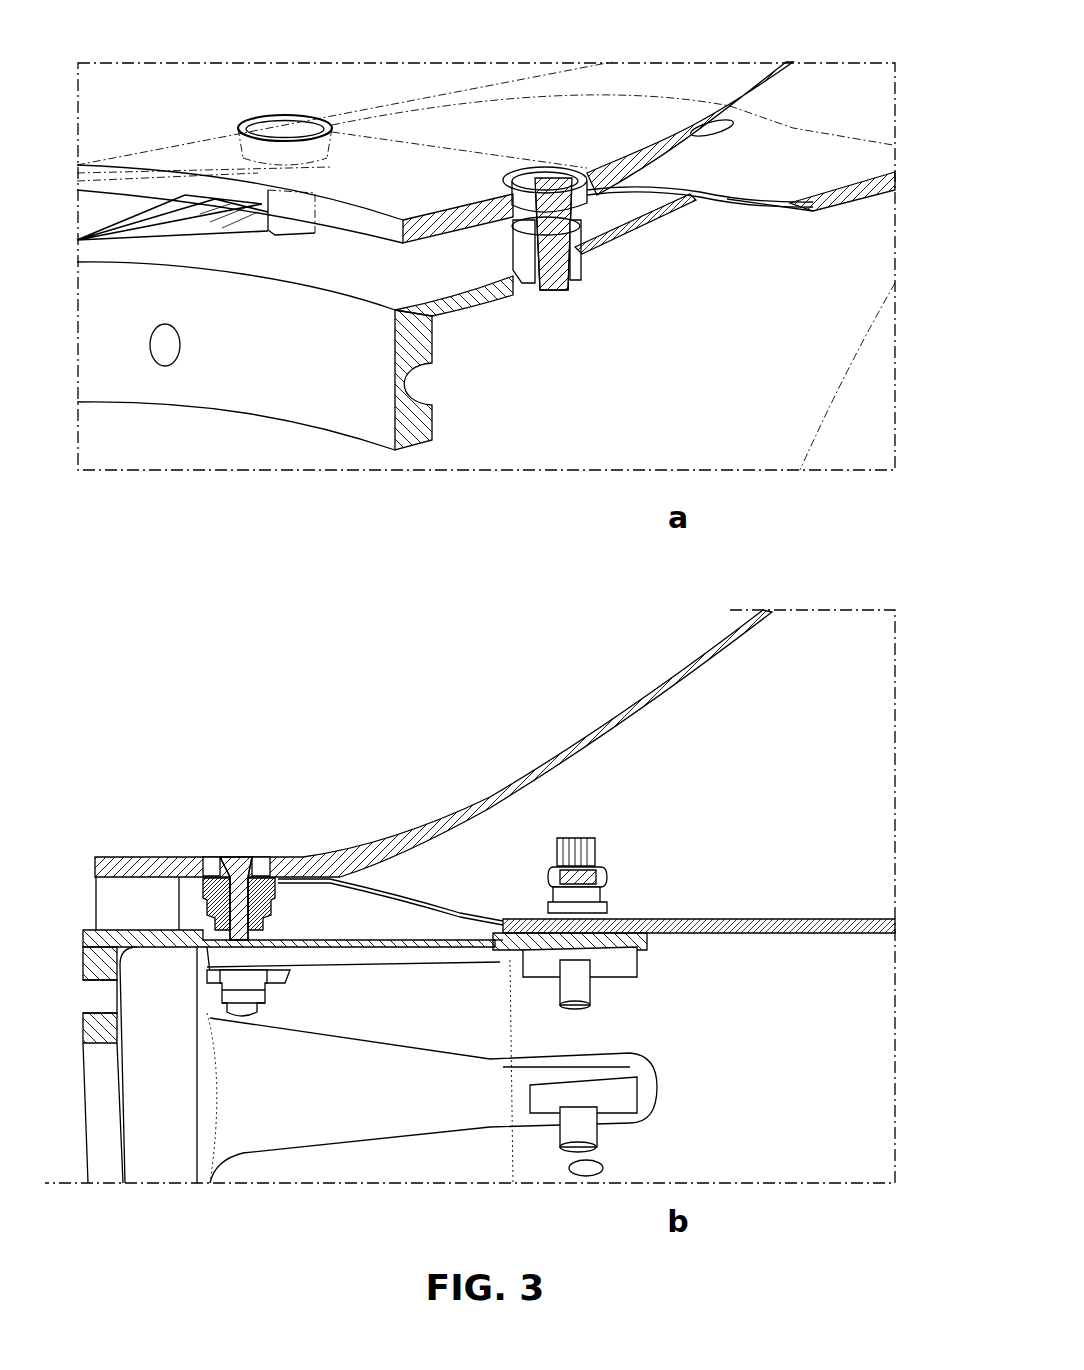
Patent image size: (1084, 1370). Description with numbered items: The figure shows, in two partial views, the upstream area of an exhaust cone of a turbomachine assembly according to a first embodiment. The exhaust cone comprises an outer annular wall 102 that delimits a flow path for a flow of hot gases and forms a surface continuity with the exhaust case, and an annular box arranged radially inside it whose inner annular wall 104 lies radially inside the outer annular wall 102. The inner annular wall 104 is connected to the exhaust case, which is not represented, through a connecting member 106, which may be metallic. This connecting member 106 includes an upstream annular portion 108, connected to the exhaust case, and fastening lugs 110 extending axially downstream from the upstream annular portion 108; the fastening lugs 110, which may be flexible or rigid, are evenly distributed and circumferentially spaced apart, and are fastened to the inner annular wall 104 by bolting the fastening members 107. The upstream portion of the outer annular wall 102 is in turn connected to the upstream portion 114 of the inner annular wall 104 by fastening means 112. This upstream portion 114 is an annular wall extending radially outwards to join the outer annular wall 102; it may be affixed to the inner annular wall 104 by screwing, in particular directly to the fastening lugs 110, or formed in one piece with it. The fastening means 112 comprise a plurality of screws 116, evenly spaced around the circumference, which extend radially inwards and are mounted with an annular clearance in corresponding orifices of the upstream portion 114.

The outer annular wall 102 is at (398, 89).
The inner annular wall 104 is at (870, 200).
The connecting member 106 is at (172, 412).
The fastening members 107 is at (613, 887).
The upstream annular portion 108 is at (108, 1160).
The fastening lugs 110 is at (297, 1125).
The fastening means 112 is at (269, 99).
The upstream portion of the inner annular wall 114 is at (725, 197).
The screws 116 is at (548, 268).